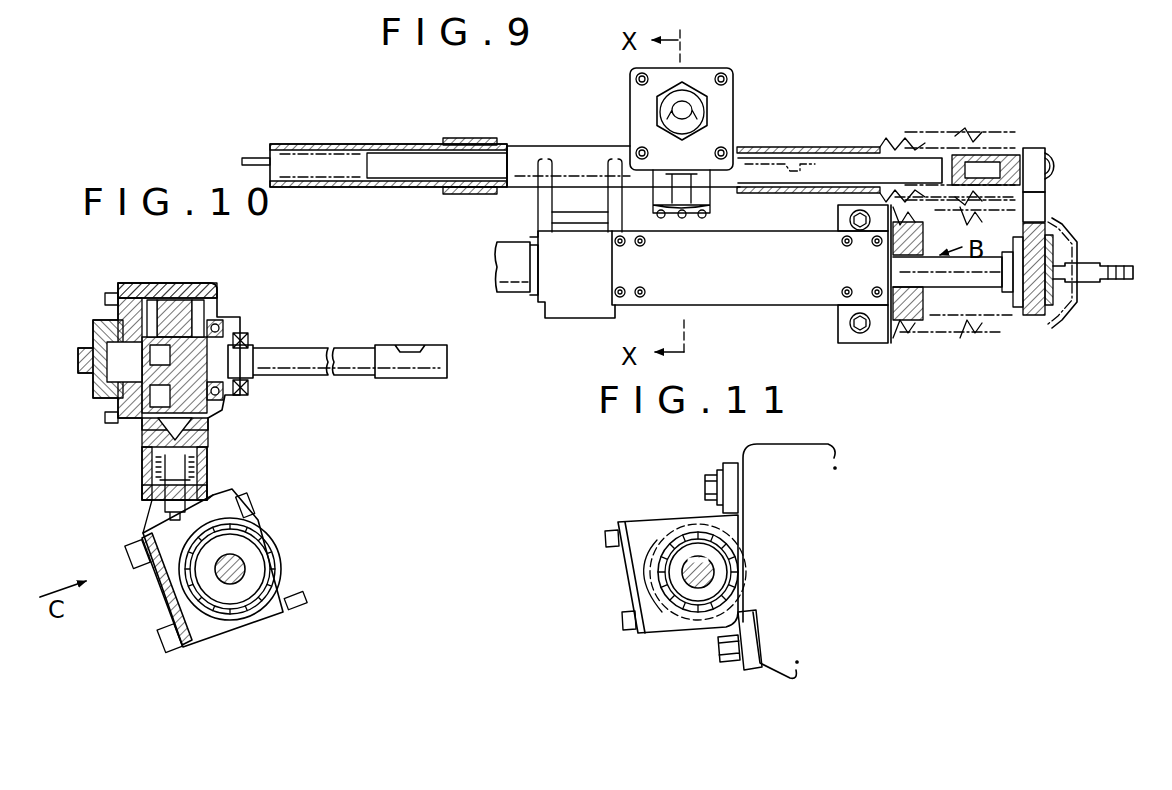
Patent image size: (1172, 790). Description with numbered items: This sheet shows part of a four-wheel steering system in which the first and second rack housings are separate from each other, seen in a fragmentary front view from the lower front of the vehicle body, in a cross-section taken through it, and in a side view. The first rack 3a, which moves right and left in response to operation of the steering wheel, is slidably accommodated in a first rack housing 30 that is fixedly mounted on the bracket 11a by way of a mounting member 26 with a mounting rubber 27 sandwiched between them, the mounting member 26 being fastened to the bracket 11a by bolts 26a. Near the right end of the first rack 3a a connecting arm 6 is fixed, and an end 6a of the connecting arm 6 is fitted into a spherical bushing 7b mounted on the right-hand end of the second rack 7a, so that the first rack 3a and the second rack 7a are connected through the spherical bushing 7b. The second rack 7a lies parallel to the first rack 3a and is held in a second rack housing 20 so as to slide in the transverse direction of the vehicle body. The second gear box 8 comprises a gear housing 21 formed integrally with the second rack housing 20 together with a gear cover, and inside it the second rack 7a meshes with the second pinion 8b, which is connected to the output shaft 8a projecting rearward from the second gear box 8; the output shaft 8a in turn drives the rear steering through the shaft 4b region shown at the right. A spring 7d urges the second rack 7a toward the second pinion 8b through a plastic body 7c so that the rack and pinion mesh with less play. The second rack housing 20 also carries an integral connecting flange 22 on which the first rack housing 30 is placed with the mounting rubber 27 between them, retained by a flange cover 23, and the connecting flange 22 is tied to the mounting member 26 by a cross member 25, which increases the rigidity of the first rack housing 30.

In FIG. 9, the first rack 3a is at (972, 272).
In FIG. 10, the first rack 3a is at (245, 566).
In FIG. 11, the first rack 3a is at (702, 583).
In FIG. 9, the output shaft 4b is at (1103, 278).
In FIG. 9, the connecting arm 6 is at (1036, 203).
In FIG. 9, the end of the connecting arm 6a is at (1033, 172).
In FIG. 9, the second rack 7a is at (840, 168).
In FIG. 10, the second rack 7a is at (140, 458).
In FIG. 9, the spherical bushing 7b is at (1018, 147).
In FIG. 10, the plastic body 7c is at (200, 445).
In FIG. 10, the spring 7d is at (197, 472).
In FIG. 10, the second gear box 8 is at (230, 297).
In FIG. 10, the output shaft 8a is at (307, 370).
In FIG. 10, the second pinion 8b is at (203, 426).
In FIG. 11, the bracket 11a is at (795, 442).
In FIG. 9, the second rack housing 20 is at (795, 144).
In FIG. 9, the gear housing 21 is at (663, 182).
In FIG. 10, the gear housing 21 is at (160, 287).
In FIG. 9, the connecting flange 22 is at (578, 283).
In FIG. 10, the connecting flange 22 is at (208, 628).
In FIG. 10, the flange cover 23 is at (272, 628).
In FIG. 9, the cross member 25 is at (780, 290).
In FIG. 10, the cross member 25 is at (158, 590).
In FIG. 11, the cross member 25 is at (628, 567).
In FIG. 9, the mounting member 26 is at (878, 333).
In FIG. 11, the mounting member 26 is at (645, 527).
In FIG. 11, the bolts 26a is at (703, 493).
In FIG. 10, the mounting rubber 27 is at (260, 533).
In FIG. 11, the mounting rubber 27 is at (733, 532).
In FIG. 9, the first rack housing 30 is at (515, 280).
In FIG. 10, the first rack housing 30 is at (266, 571).
In FIG. 11, the first rack housing 30 is at (747, 577).